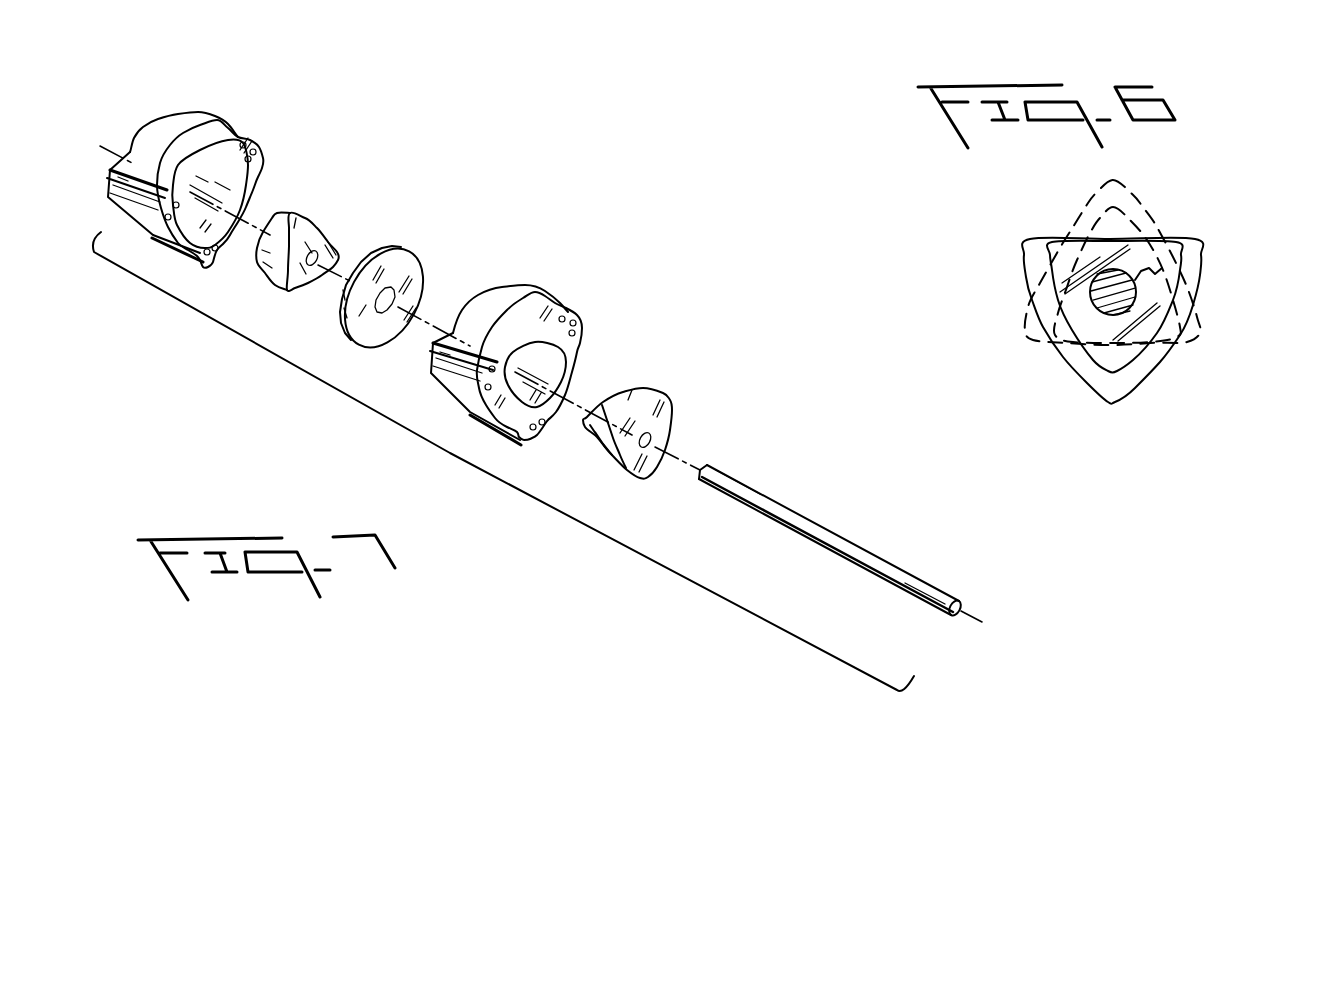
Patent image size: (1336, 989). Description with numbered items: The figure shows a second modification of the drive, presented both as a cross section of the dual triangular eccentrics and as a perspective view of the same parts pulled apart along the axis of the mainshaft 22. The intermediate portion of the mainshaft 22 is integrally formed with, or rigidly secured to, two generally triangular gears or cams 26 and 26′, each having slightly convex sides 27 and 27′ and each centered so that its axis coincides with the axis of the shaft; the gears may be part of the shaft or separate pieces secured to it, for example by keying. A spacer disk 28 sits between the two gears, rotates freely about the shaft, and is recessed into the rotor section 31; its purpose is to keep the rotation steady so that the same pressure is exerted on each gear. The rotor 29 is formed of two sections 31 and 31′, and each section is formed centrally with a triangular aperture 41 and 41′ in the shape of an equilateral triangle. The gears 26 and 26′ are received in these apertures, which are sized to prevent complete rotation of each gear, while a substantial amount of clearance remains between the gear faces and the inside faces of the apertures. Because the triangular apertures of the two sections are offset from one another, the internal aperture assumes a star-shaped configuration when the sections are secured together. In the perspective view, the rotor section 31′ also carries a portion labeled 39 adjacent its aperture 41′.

In FIG. 7, the mainshaft 22 is at (758, 496).
In FIG. 6, the mainshaft 22 is at (1162, 268).
In FIG. 7, the gear 26 is at (672, 423).
In FIG. 6, the gear 26 is at (1137, 357).
In FIG. 7, the gear 26′ is at (332, 228).
In FIG. 6, the gear 26′ is at (1088, 222).
In FIG. 7, the convex side 27 is at (640, 380).
In FIG. 7, the convex side 27′ is at (305, 213).
In FIG. 7, the spacer disk 28 is at (405, 251).
In FIG. 7, the rotor 29 is at (450, 453).
In FIG. 7, the rotor section 31 is at (497, 297).
In FIG. 7, the rotor section 31′ is at (152, 142).
In FIG. 7, the flange 39 is at (255, 185).
In FIG. 7, the triangular aperture 41 is at (552, 375).
In FIG. 6, the triangular aperture 41 is at (1102, 383).
In FIG. 7, the triangular aperture 41′ is at (217, 173).
In FIG. 6, the triangular aperture 41′ is at (1097, 192).